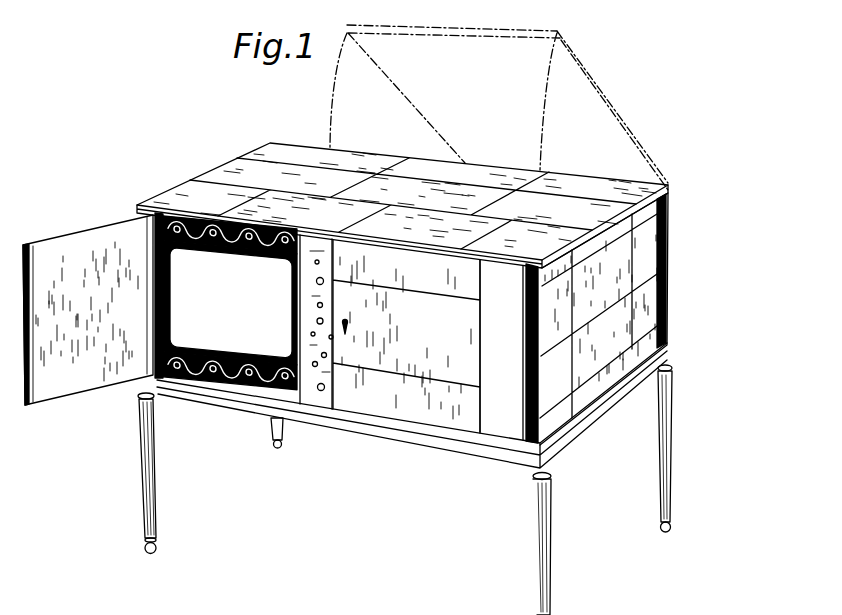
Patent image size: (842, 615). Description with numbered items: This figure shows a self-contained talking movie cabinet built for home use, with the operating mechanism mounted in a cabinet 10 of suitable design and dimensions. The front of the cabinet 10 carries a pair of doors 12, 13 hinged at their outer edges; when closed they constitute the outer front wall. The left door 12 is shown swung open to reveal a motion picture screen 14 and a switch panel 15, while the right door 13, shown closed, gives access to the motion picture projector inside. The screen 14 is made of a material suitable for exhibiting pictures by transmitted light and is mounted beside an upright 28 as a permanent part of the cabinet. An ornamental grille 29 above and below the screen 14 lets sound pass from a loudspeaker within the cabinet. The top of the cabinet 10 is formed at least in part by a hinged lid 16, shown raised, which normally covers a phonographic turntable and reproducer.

The cabinet 10 is at (645, 300).
The left door 12 is at (80, 240).
The right door 13 is at (432, 410).
The motion picture screen 14 is at (231, 302).
The switch panel 15 is at (310, 240).
The hinged lid 16 is at (560, 178).
The upright 28 is at (300, 387).
The ornamental grille 29 is at (203, 225).